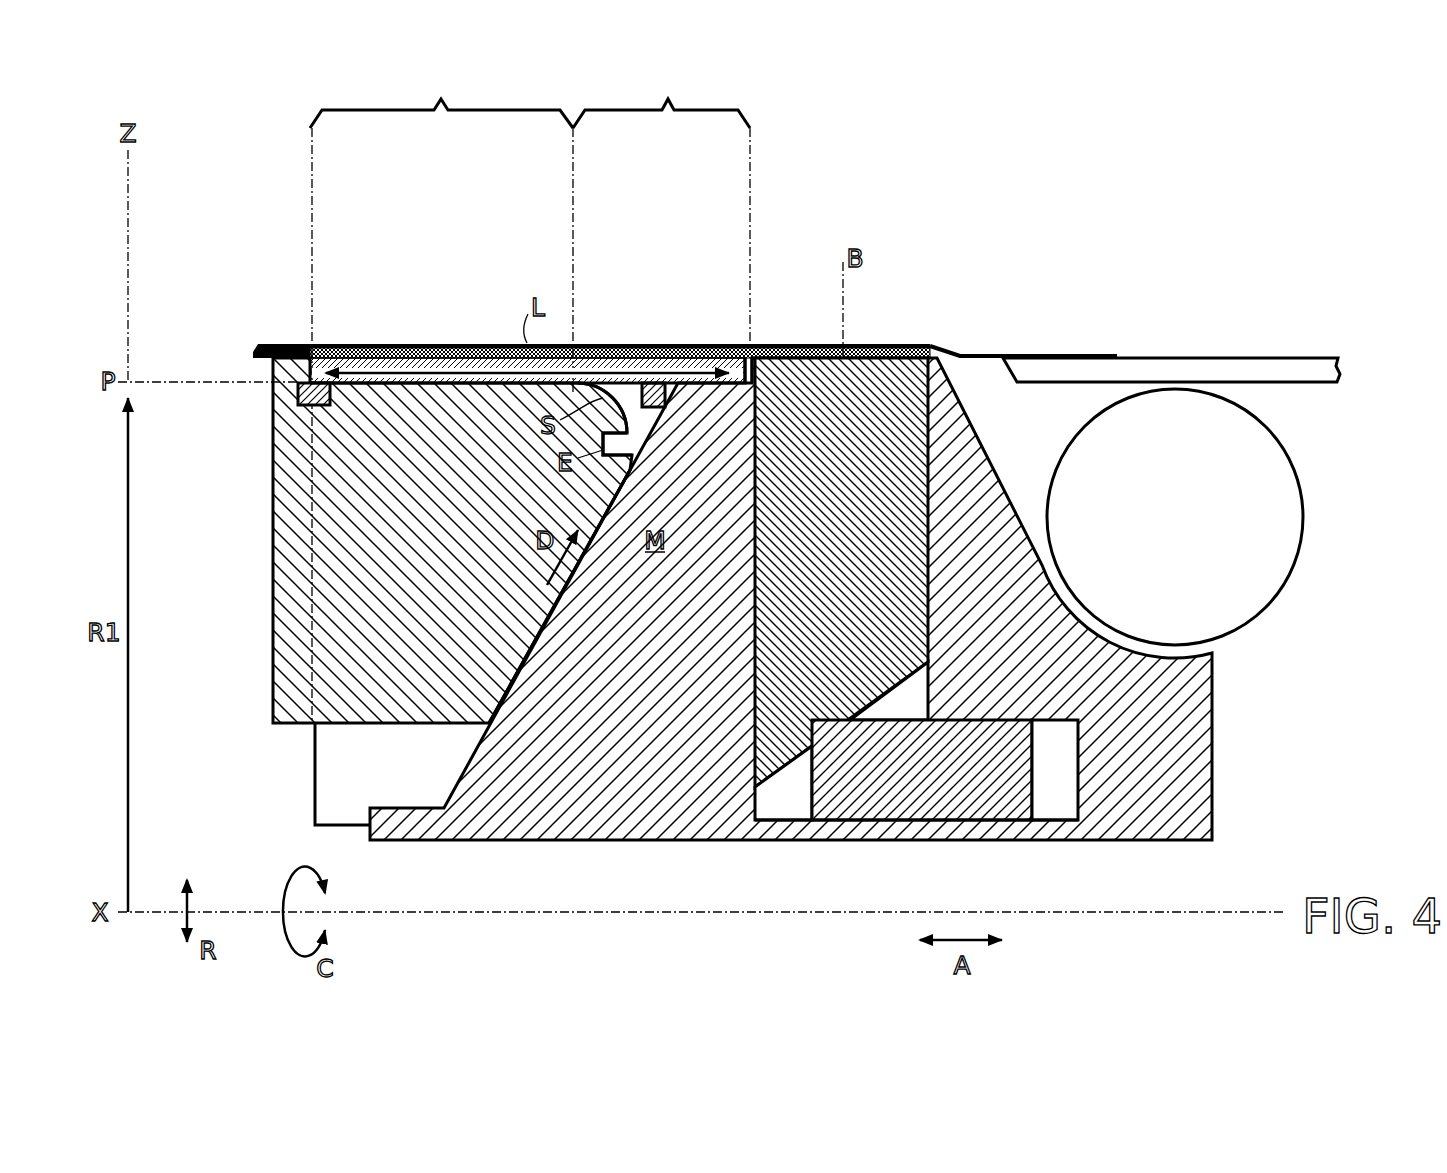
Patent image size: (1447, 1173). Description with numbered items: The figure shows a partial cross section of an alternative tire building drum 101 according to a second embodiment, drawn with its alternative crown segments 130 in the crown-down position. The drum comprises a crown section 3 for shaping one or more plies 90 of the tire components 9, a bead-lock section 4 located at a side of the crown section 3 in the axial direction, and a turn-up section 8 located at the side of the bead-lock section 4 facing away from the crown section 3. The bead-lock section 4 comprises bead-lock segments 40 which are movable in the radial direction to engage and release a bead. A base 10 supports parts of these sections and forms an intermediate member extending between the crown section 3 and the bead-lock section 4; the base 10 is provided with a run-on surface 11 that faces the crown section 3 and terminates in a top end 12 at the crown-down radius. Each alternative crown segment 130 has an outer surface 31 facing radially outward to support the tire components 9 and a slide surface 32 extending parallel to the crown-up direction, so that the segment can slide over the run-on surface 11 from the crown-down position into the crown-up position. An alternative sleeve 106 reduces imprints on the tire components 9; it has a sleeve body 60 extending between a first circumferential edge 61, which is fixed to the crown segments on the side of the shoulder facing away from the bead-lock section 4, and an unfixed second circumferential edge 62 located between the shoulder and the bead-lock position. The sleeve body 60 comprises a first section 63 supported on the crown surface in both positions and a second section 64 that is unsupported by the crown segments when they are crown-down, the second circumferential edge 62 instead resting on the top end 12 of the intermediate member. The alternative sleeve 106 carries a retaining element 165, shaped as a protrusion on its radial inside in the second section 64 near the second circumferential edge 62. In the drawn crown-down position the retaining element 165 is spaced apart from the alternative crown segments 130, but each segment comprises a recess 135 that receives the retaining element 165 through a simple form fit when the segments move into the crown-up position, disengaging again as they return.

The crown section 3 is at (705, 206).
The bead-lock section 4 is at (864, 222).
The turn-up section 8 is at (1036, 281).
The tire components 9 is at (290, 345).
The base 10 is at (668, 795).
The run-on surface 11 is at (462, 767).
The top end 12 is at (667, 343).
The outer surface 31 is at (375, 395).
The slide surface 32 is at (533, 637).
The bead-lock segments 40 is at (800, 715).
The sleeve body 60 is at (602, 343).
The first circumferential edge 61 is at (300, 388).
The second circumferential edge 62 is at (752, 343).
The first section 63 is at (441, 99).
The second section 64 is at (661, 98).
The plies 90 is at (333, 345).
The alternative tire building drum 101 is at (1275, 229).
The alternative sleeve 106 is at (452, 343).
The alternative crown segments 130 is at (290, 560).
The recess 135 is at (598, 425).
The retaining element 165 is at (635, 343).